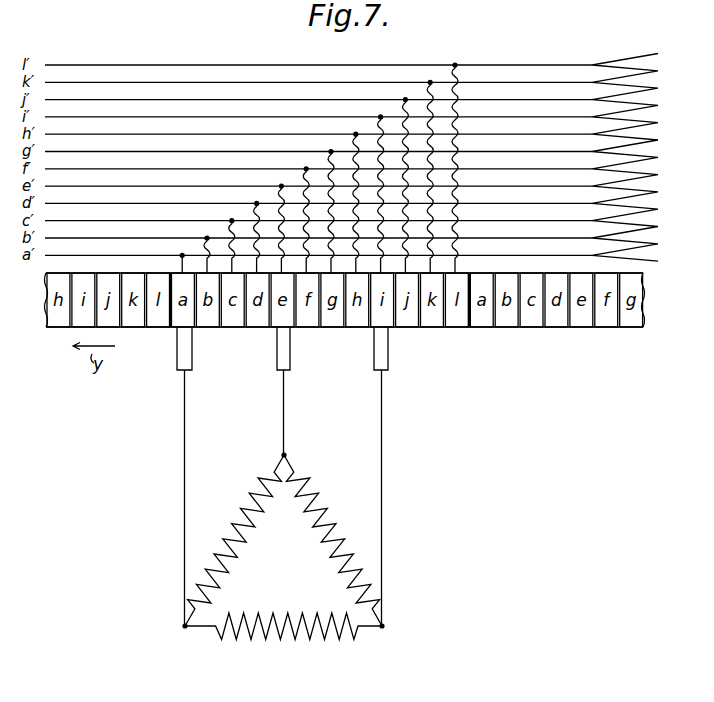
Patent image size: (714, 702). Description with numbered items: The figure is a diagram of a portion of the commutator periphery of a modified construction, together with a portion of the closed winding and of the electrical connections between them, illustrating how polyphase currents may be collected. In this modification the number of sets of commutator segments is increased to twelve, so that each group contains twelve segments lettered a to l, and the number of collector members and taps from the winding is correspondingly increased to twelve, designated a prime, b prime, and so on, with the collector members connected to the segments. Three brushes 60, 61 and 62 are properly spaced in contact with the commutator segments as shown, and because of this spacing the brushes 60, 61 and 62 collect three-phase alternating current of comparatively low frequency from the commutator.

The brush 60 is at (192, 346).
The brush 61 is at (290, 346).
The brush 62 is at (388, 346).